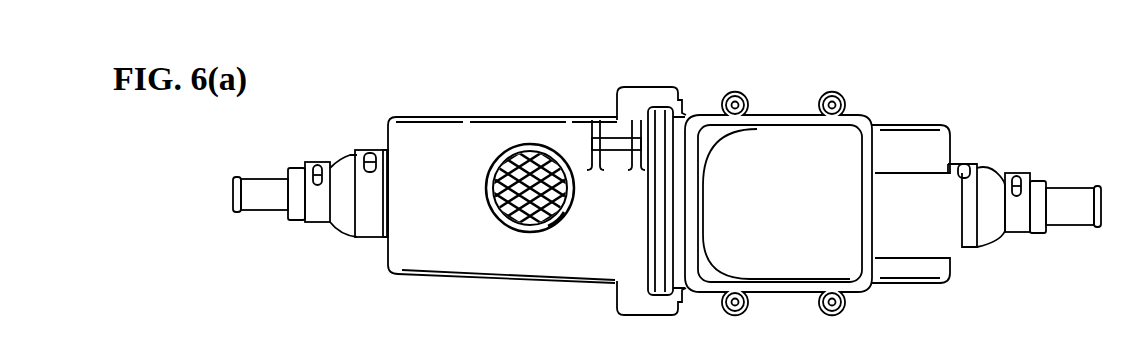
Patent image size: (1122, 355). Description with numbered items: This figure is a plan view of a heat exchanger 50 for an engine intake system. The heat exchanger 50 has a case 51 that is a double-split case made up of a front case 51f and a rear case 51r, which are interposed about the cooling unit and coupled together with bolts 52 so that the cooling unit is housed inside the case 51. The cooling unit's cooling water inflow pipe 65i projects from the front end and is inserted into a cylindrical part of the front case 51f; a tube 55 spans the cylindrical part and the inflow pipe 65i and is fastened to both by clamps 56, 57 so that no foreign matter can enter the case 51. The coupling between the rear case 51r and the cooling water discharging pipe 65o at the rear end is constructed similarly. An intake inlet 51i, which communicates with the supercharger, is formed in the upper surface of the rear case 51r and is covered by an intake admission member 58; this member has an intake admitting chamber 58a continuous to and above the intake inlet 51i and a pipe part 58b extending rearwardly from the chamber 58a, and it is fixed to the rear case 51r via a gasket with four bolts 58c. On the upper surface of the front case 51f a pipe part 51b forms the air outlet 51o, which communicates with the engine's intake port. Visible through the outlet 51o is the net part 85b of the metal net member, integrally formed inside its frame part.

The heat exchanger 50 is at (950, 290).
The case 51 is at (614, 309).
The front case 51f is at (441, 255).
The outlet 51o is at (532, 222).
The net part 85b is at (501, 222).
The pipe part 51b is at (563, 220).
The intake inlet 51i is at (772, 205).
The rear case 51r is at (892, 272).
The bolts 52 is at (680, 94).
The tube 55 is at (345, 228).
The clamp 56 is at (368, 232).
The clamp 57 is at (312, 217).
The intake admission member 58 is at (808, 178).
The intake admitting chamber 58a is at (780, 231).
The pipe part 58b is at (920, 245).
The bolts 58c is at (826, 97).
The cooling water inflow pipe 65i is at (262, 207).
The cooling water discharging pipe 65o is at (1070, 228).